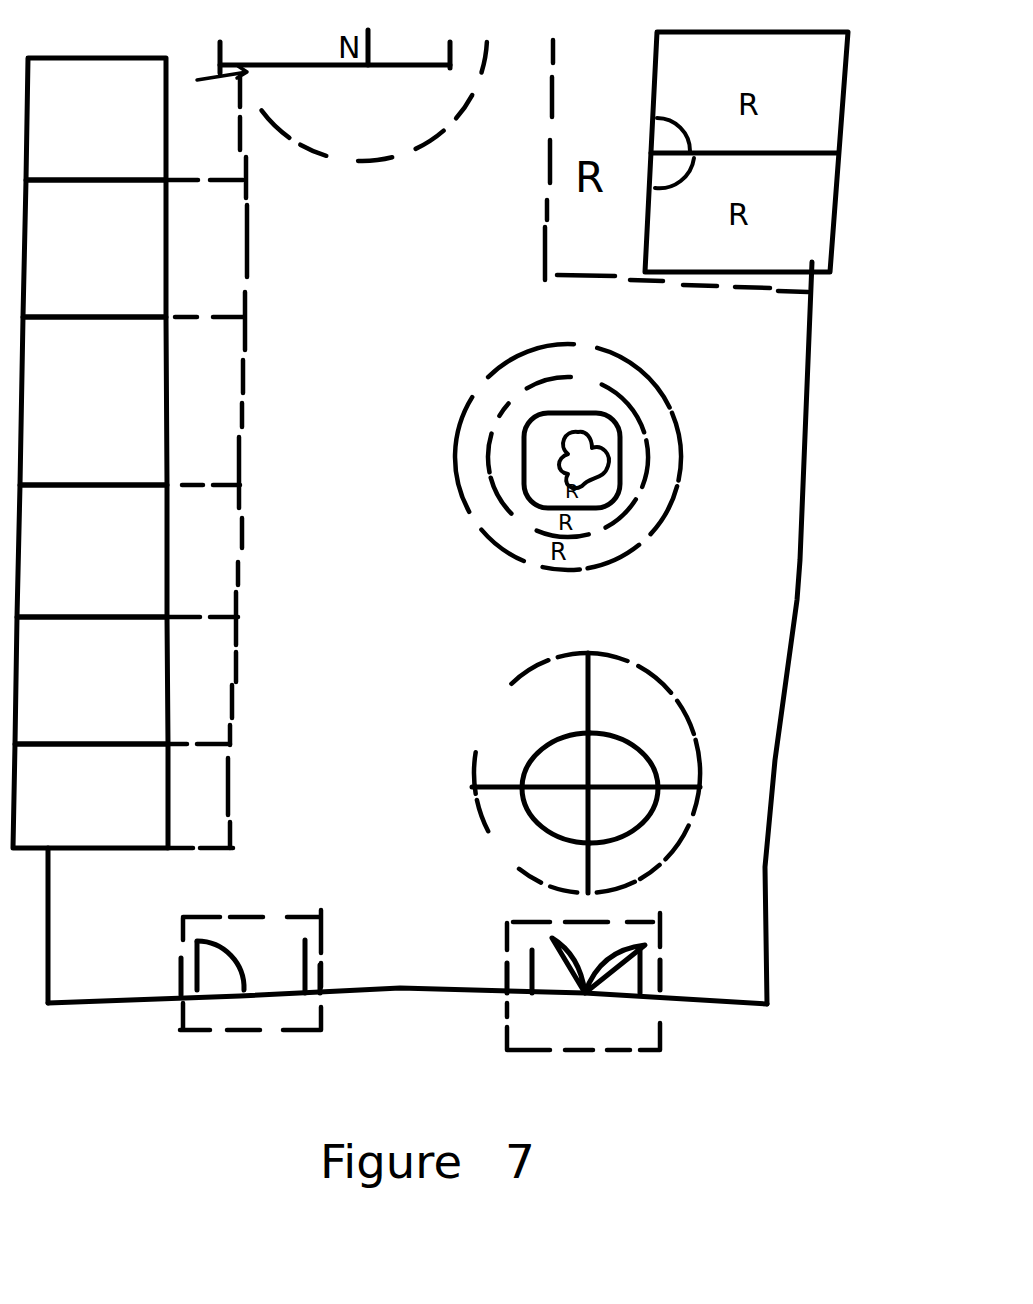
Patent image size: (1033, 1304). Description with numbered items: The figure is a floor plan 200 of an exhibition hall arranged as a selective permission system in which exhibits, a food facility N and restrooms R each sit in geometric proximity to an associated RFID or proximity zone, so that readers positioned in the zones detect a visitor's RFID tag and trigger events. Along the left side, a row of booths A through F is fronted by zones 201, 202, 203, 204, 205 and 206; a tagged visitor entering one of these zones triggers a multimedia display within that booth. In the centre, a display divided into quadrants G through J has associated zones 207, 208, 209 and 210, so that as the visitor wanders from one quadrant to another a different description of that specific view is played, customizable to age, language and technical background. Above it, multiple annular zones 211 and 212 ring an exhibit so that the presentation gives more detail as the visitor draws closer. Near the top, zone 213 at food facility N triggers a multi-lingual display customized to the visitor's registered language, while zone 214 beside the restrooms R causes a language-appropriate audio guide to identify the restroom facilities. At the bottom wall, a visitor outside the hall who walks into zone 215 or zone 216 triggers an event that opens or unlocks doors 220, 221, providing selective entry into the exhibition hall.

The floor plan 200 is at (823, 519).
The RFID zone 201 is at (216, 162).
The RFID zone 202 is at (222, 290).
The RFID zone 203 is at (224, 423).
The RFID zone 204 is at (226, 576).
The RFID zone 205 is at (218, 699).
The RFID zone 206 is at (218, 813).
The RFID zone 207 is at (546, 726).
The RFID zone 208 is at (650, 725).
The RFID zone 209 is at (546, 863).
The RFID zone 210 is at (652, 866).
The annular zone 211 is at (625, 433).
The annular zone 212 is at (657, 477).
The RFID zone 213 is at (340, 140).
The RFID zone 214 is at (570, 228).
The RFID zone 215 is at (283, 920).
The RFID zone 216 is at (533, 935).
The door 220 is at (200, 968).
The door 221 is at (633, 967).